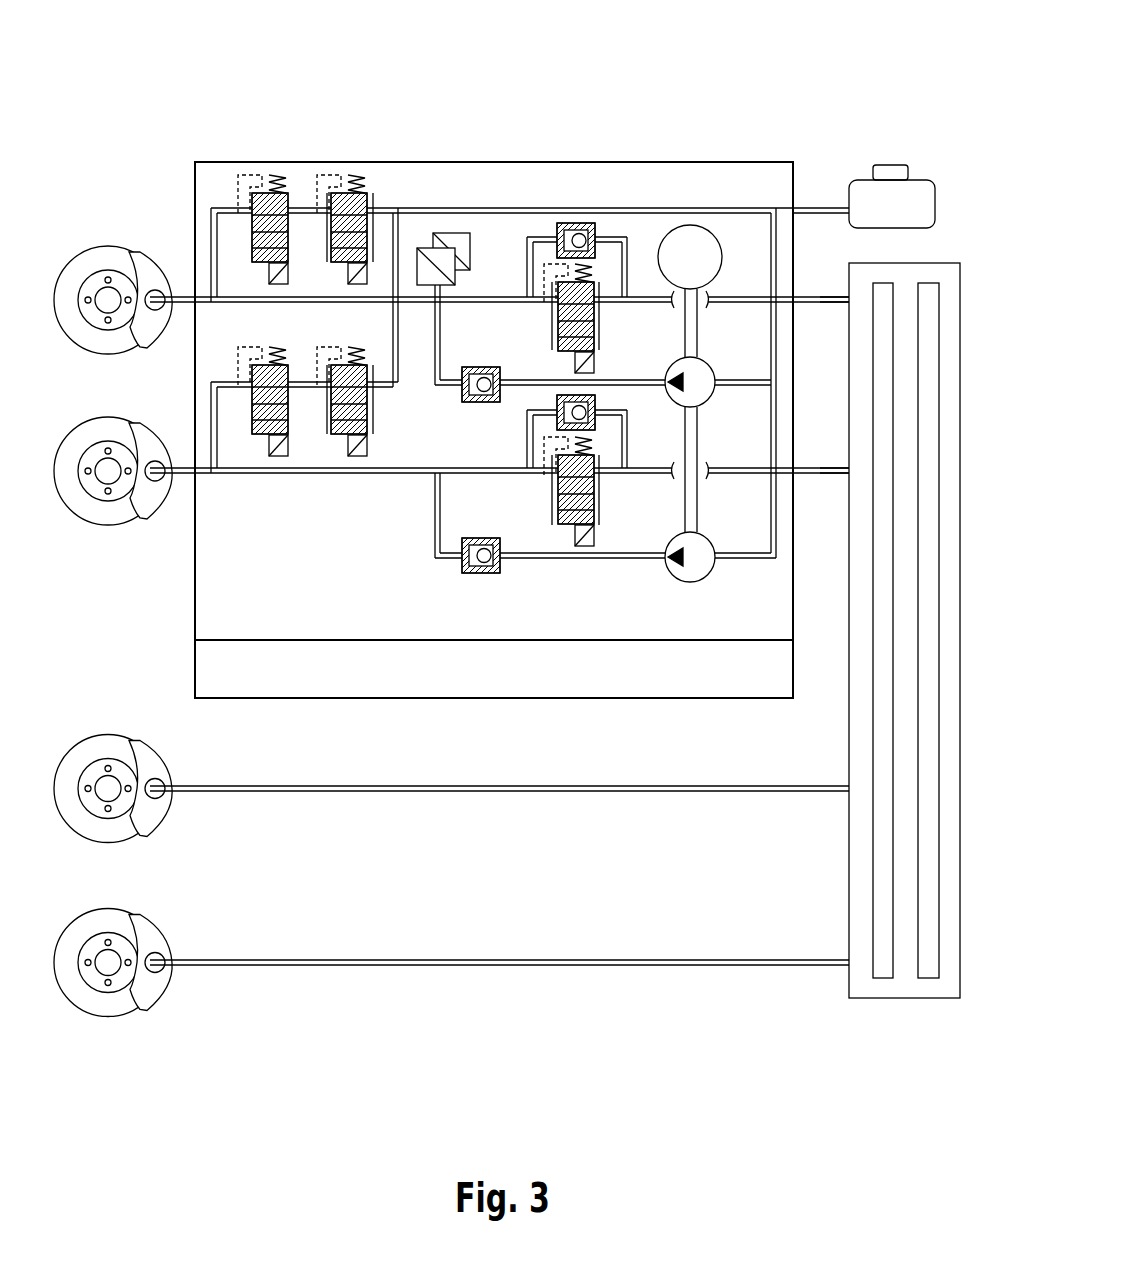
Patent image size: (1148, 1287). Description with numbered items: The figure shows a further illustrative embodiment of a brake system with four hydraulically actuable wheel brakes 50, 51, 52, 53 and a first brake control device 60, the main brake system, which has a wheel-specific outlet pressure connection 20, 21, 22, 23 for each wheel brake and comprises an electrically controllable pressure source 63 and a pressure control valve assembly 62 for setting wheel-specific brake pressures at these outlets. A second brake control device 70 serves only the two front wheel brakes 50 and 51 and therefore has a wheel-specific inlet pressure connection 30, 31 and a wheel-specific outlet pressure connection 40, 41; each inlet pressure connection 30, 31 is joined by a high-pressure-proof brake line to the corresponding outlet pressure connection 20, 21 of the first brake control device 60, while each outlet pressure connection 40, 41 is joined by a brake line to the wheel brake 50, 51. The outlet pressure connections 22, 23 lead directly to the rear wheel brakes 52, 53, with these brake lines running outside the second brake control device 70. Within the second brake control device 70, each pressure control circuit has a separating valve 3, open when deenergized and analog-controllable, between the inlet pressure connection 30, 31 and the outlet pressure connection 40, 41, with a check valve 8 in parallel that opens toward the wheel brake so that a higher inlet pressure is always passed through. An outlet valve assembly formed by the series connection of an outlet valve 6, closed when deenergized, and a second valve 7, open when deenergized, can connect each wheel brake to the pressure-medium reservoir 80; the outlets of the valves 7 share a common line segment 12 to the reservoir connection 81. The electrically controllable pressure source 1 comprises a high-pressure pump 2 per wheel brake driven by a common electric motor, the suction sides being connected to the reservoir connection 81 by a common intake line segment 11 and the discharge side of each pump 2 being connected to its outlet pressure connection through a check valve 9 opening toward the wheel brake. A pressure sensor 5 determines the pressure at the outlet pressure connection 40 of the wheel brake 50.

The electrically controllable pressure source 1 is at (705, 351).
The high-pressure pump 2 is at (706, 392).
The separating valve 3 is at (595, 320).
The pressure sensor 5 is at (471, 256).
The outlet valve 6 is at (250, 223).
The second valve 7 is at (329, 221).
The check valve 8 is at (596, 232).
The check valve 9 is at (481, 403).
The common intake line segment 11 is at (770, 273).
The common line segment 12 is at (437, 200).
The outlet pressure connection 20 is at (843, 308).
The outlet pressure connection 21 is at (842, 478).
The outlet pressure connection 22 is at (843, 796).
The outlet pressure connection 23 is at (843, 971).
The inlet pressure connection 30 is at (798, 294).
The inlet pressure connection 31 is at (800, 463).
The outlet pressure connection 40 is at (188, 288).
The outlet pressure connection 41 is at (188, 484).
The wheel brake 50 is at (143, 260).
The wheel brake 51 is at (143, 508).
The wheel brake 52 is at (143, 749).
The wheel brake 53 is at (143, 999).
The first brake control device 60 is at (872, 1001).
The pressure control valve assembly 62 is at (882, 968).
The electrically controllable pressure source 63 is at (928, 968).
The second brake control device 70 is at (698, 120).
The pressure-medium reservoir 80 is at (918, 193).
The reservoir connection 81 is at (798, 201).